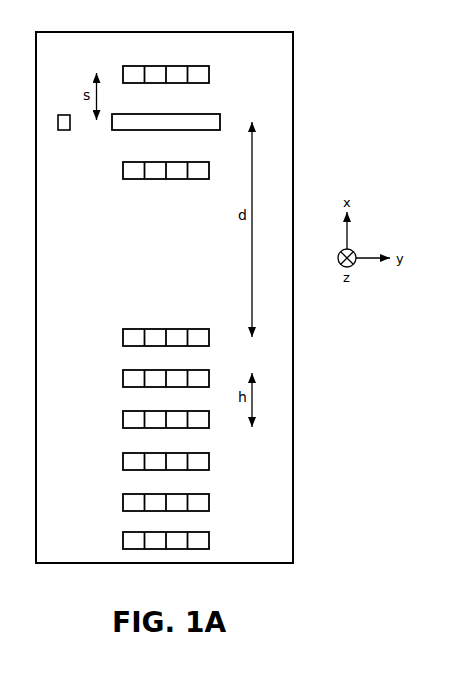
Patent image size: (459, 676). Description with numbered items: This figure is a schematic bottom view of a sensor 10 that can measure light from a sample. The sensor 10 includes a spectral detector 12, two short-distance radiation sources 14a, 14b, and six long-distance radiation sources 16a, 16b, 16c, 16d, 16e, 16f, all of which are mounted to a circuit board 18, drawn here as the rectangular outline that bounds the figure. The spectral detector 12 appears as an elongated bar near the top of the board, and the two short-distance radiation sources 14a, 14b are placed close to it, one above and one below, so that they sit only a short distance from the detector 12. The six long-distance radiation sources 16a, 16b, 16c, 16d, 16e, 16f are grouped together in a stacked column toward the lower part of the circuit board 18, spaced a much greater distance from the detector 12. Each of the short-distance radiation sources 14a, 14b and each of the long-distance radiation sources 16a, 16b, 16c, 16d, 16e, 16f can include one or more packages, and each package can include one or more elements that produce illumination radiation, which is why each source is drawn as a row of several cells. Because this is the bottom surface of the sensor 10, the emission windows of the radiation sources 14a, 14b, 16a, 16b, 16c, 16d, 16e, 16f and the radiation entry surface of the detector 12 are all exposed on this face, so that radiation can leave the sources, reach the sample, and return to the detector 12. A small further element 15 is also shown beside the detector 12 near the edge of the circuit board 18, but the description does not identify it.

The sensor 10 is at (328, 128).
The spectral detector 12 is at (122, 130).
The short-distance radiation source 14a is at (137, 66).
The short-distance radiation source 14b is at (137, 179).
The reference sensor 15 is at (58, 118).
The long-distance radiation source 16a is at (123, 338).
The long-distance radiation source 16b is at (123, 378).
The long-distance radiation source 16c is at (123, 419).
The long-distance radiation source 16d is at (123, 461).
The long-distance radiation source 16e is at (123, 502).
The long-distance radiation source 16f is at (123, 541).
The circuit board 18 is at (294, 388).